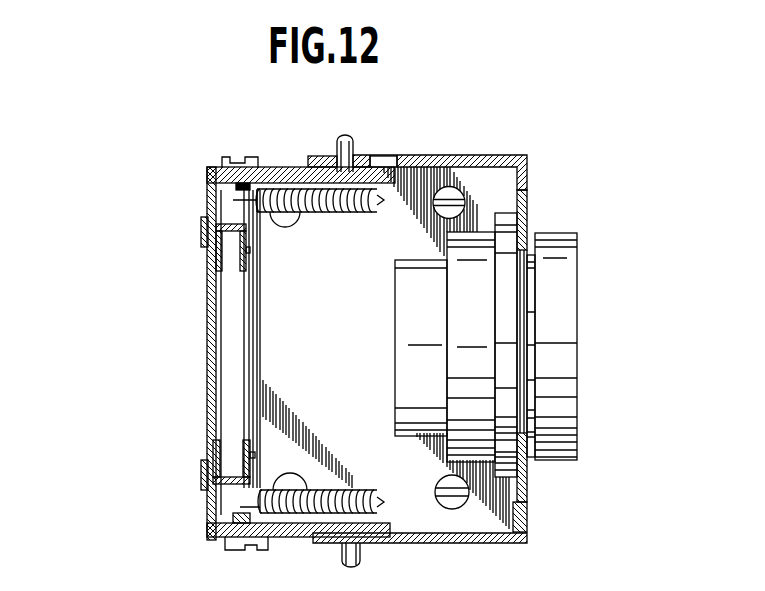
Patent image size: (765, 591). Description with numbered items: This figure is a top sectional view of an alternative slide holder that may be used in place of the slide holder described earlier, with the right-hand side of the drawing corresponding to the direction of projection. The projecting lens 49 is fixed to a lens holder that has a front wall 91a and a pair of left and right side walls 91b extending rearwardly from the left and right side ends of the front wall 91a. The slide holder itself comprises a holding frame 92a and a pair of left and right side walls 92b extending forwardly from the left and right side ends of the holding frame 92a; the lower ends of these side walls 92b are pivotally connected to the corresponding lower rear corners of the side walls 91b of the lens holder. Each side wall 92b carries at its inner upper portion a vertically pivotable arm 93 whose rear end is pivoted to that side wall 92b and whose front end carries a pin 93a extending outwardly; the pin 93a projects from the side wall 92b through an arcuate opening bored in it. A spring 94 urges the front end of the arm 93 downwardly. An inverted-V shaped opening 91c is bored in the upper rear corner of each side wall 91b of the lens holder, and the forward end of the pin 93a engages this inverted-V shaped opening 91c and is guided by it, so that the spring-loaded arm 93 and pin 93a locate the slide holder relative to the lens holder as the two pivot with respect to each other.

The projecting lens 49 is at (567, 292).
The front wall 91a is at (527, 203).
The side wall 91b is at (468, 155).
The inverted-V shaped opening 91c is at (392, 158).
The holding frame 92a is at (212, 304).
The side wall 92b is at (292, 170).
The arm 93 is at (276, 181).
The pin 93a is at (338, 146).
The spring 94 is at (331, 212).